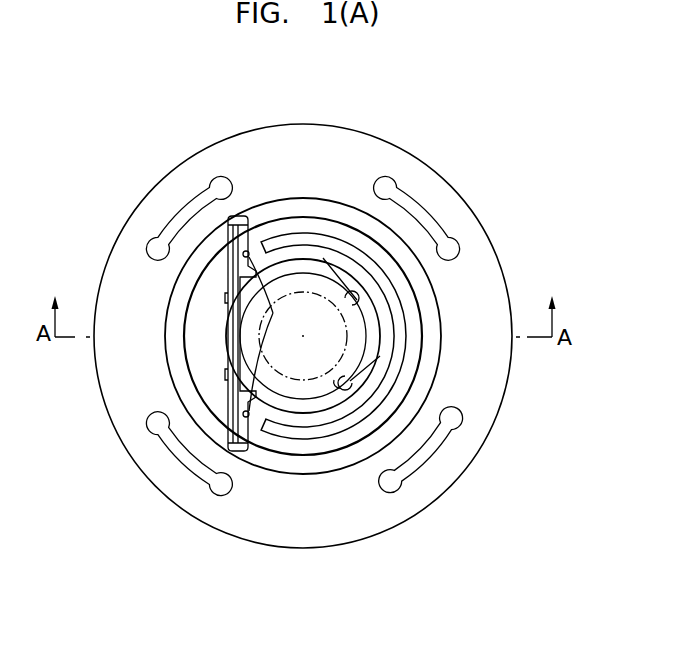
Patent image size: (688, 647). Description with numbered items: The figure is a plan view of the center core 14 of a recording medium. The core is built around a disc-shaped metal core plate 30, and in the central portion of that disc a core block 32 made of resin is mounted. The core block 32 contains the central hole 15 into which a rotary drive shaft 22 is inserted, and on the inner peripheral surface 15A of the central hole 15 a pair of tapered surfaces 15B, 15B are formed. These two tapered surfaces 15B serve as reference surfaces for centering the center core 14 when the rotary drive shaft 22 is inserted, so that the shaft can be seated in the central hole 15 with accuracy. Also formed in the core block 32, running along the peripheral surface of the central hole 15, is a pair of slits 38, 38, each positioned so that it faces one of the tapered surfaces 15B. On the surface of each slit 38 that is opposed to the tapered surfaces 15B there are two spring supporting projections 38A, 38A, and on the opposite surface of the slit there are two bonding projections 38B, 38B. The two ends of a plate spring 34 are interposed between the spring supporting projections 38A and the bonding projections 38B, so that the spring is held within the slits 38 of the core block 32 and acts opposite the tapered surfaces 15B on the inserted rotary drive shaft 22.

The center core 14 is at (490, 165).
The central hole 15 is at (378, 333).
The inner peripheral surface 15A is at (327, 405).
The tapered surfaces 15B is at (360, 302).
The rotary drive shaft 22 is at (287, 394).
The core plate 30 is at (394, 149).
The core block 32 is at (292, 245).
The plate spring 34 is at (227, 381).
The slits 38 is at (249, 217).
The spring supporting projections 38A is at (230, 267).
The bonding projections 38B is at (273, 313).